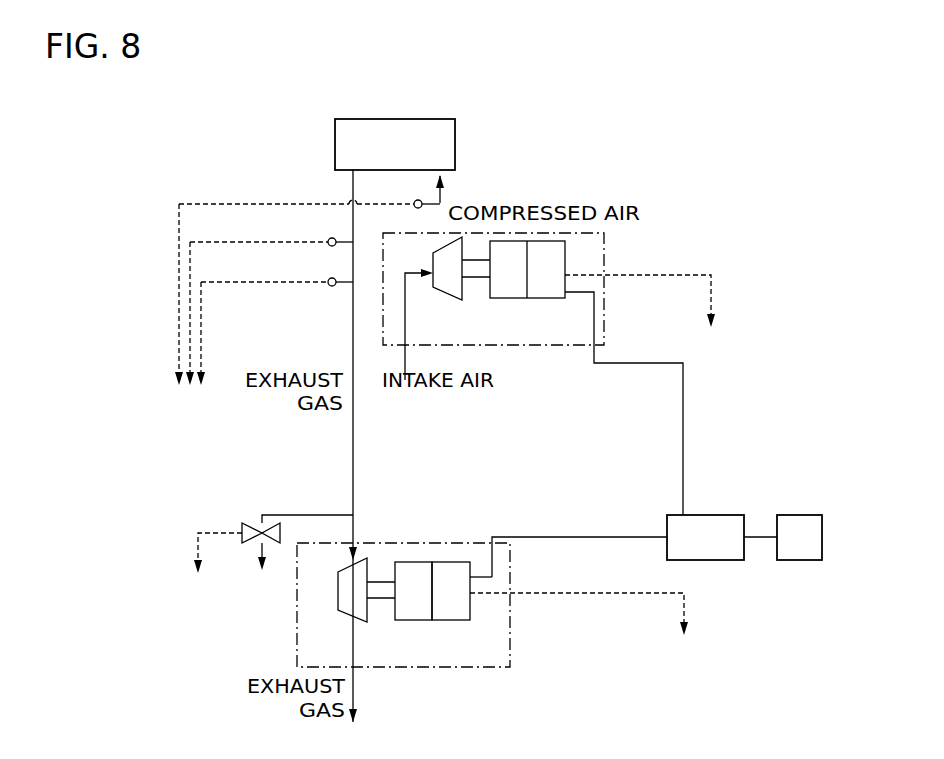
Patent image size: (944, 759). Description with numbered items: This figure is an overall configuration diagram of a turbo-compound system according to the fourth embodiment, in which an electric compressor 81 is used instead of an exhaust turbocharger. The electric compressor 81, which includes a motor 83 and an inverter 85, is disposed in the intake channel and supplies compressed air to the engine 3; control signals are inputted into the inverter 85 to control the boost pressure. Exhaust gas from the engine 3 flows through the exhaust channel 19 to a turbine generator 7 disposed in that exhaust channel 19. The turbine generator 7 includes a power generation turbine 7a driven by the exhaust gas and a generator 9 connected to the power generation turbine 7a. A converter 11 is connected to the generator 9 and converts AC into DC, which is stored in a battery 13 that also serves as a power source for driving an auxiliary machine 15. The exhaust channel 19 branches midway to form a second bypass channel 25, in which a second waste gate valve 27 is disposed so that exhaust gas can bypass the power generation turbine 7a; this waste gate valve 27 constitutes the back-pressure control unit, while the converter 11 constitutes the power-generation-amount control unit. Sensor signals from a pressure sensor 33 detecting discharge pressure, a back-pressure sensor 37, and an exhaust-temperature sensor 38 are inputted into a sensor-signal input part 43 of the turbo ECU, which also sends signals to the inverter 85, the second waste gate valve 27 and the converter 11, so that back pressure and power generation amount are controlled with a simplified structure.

The engine 3 is at (455, 140).
The turbine generator 7 is at (430, 605).
The power generation turbine 7a is at (346, 612).
The generator 9 is at (412, 620).
The converter 11 is at (448, 620).
The battery 13 is at (702, 560).
The auxiliary machine 15 is at (799, 560).
The exhaust channel 19 is at (356, 458).
The second bypass channel 25 is at (305, 514).
The second waste gate valve 27 is at (250, 521).
The pressure sensor 33 is at (410, 198).
The back-pressure sensor 37 is at (324, 238).
The exhaust-temperature sensor 38 is at (324, 278).
The sensor-signal input part 43 is at (218, 410).
The electric compressor 81 is at (527, 306).
The motor 83 is at (507, 298).
The inverter 85 is at (543, 298).